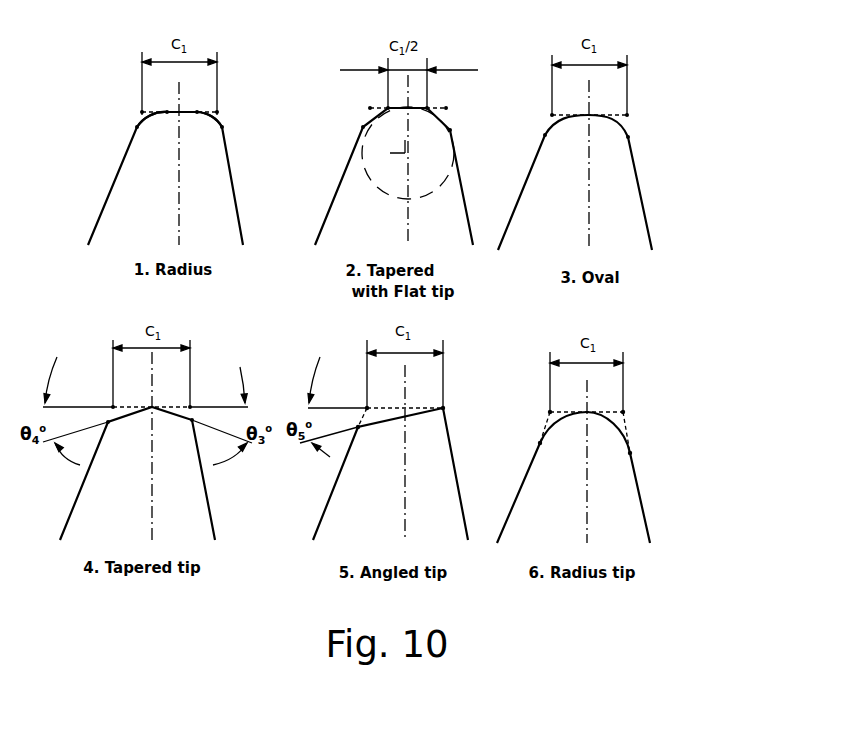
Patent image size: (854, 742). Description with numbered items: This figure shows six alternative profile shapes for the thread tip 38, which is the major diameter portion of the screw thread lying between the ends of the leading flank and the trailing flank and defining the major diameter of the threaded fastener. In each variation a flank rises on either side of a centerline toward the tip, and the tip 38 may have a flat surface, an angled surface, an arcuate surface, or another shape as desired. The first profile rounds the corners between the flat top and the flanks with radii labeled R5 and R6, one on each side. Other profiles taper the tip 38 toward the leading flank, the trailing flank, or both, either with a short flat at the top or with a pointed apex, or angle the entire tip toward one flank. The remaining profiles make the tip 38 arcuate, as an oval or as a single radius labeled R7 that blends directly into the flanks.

The thread tip 38 is at (628, 122).
The left tip radius R5 is at (132, 118).
The right tip radius R6 is at (226, 118).
The tip radius R7 is at (628, 425).